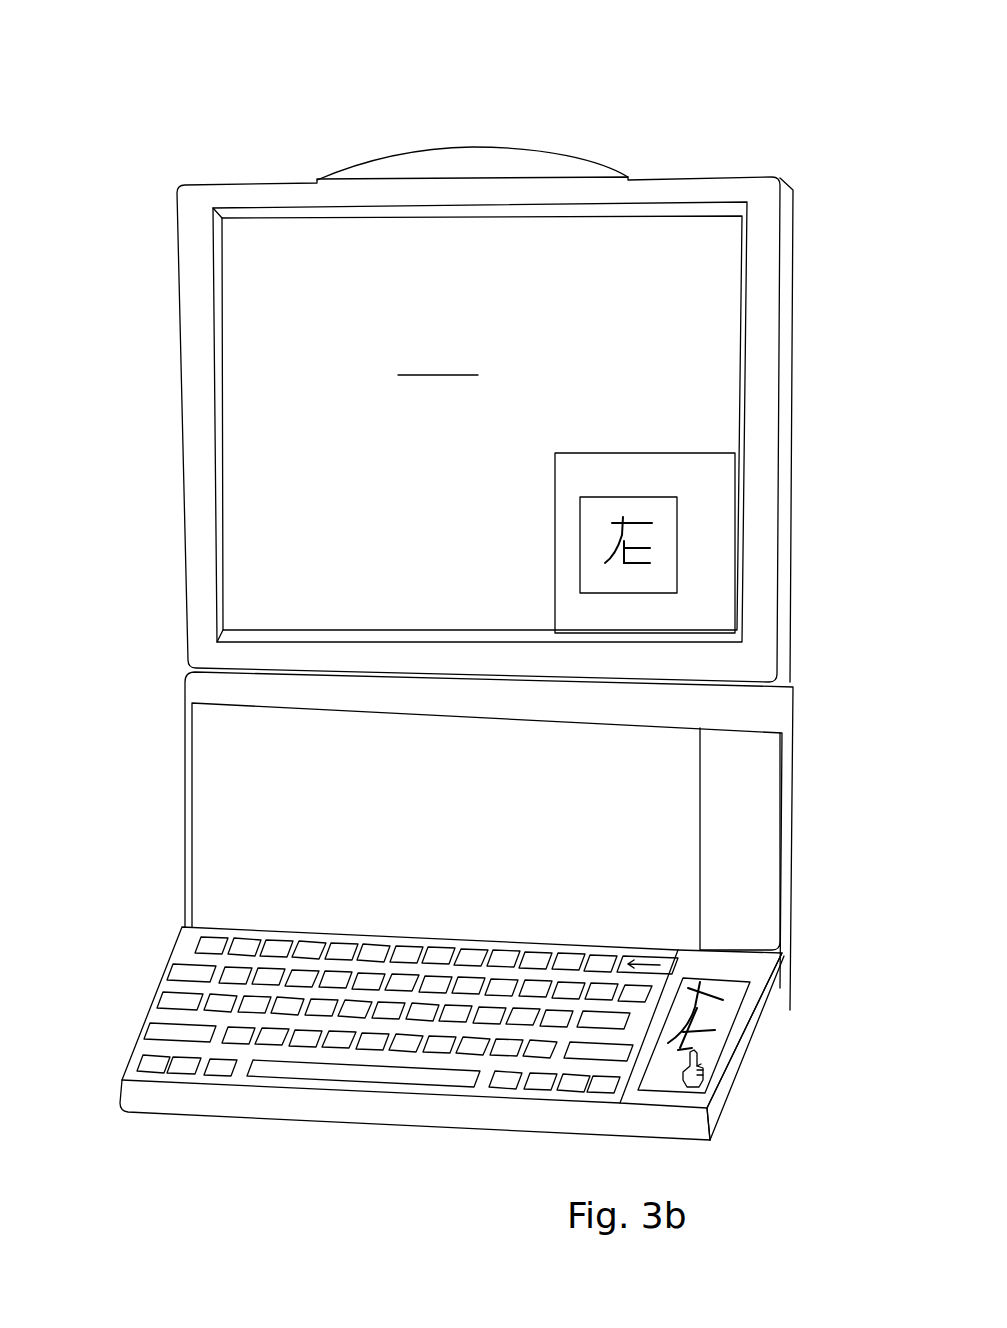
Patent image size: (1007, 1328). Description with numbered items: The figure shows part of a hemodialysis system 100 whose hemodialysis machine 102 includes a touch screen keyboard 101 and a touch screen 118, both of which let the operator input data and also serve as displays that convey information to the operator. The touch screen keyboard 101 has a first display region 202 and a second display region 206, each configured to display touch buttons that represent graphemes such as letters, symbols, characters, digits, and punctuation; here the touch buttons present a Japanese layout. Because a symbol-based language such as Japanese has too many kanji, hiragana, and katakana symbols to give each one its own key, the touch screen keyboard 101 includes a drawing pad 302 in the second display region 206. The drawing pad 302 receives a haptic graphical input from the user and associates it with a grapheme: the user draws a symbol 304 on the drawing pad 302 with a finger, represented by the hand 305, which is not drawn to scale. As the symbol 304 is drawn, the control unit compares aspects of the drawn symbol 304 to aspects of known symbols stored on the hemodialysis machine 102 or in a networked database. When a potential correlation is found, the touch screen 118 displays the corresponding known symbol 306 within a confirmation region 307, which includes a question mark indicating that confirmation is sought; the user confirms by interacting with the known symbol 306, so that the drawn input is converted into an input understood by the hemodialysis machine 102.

The hemodialysis system 100 is at (146, 113).
The touch screen 118 is at (718, 238).
The hemodialysis machine 102 is at (158, 780).
The touch screen keyboard 101 is at (115, 1060).
The first display region 202 is at (668, 952).
The second display region 206 is at (718, 958).
The drawing pad 302 is at (743, 1005).
The drawn symbol 304 is at (725, 988).
The hand 305 is at (702, 1075).
The known symbol 306 is at (642, 520).
The confirmation region 307 is at (535, 527).